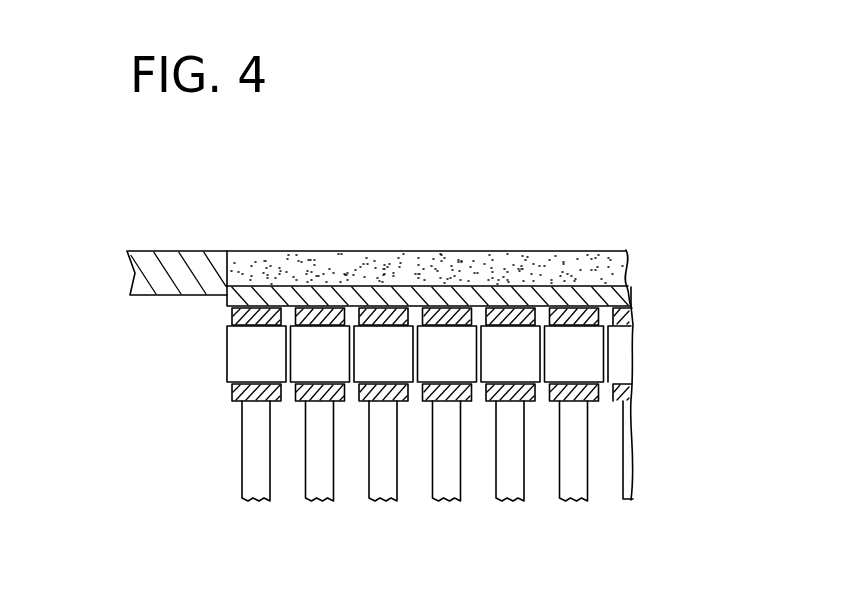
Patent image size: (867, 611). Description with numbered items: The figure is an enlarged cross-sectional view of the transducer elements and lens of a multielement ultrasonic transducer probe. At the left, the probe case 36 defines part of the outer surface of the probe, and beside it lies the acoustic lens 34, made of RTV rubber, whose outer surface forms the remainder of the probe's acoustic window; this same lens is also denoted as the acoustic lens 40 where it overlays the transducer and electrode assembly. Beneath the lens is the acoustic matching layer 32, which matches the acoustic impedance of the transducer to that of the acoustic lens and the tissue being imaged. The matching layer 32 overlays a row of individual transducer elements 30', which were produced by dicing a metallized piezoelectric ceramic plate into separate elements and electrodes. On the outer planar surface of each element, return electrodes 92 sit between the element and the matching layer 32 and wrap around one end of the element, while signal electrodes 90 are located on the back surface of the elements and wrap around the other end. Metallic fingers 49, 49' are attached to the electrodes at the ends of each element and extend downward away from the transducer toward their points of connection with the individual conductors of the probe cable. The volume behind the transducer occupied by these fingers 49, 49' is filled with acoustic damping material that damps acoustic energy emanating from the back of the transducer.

The probe case 36 is at (170, 257).
The acoustic lens 34 is at (493, 267).
The acoustic lens 40 is at (322, 241).
The acoustic matching layer 32 is at (606, 297).
The return electrodes 92 is at (228, 312).
The transducer elements 30' is at (375, 354).
The signal electrodes 90 is at (233, 389).
The metallic fingers 49 is at (384, 451).
The metallic fingers 49' is at (282, 488).